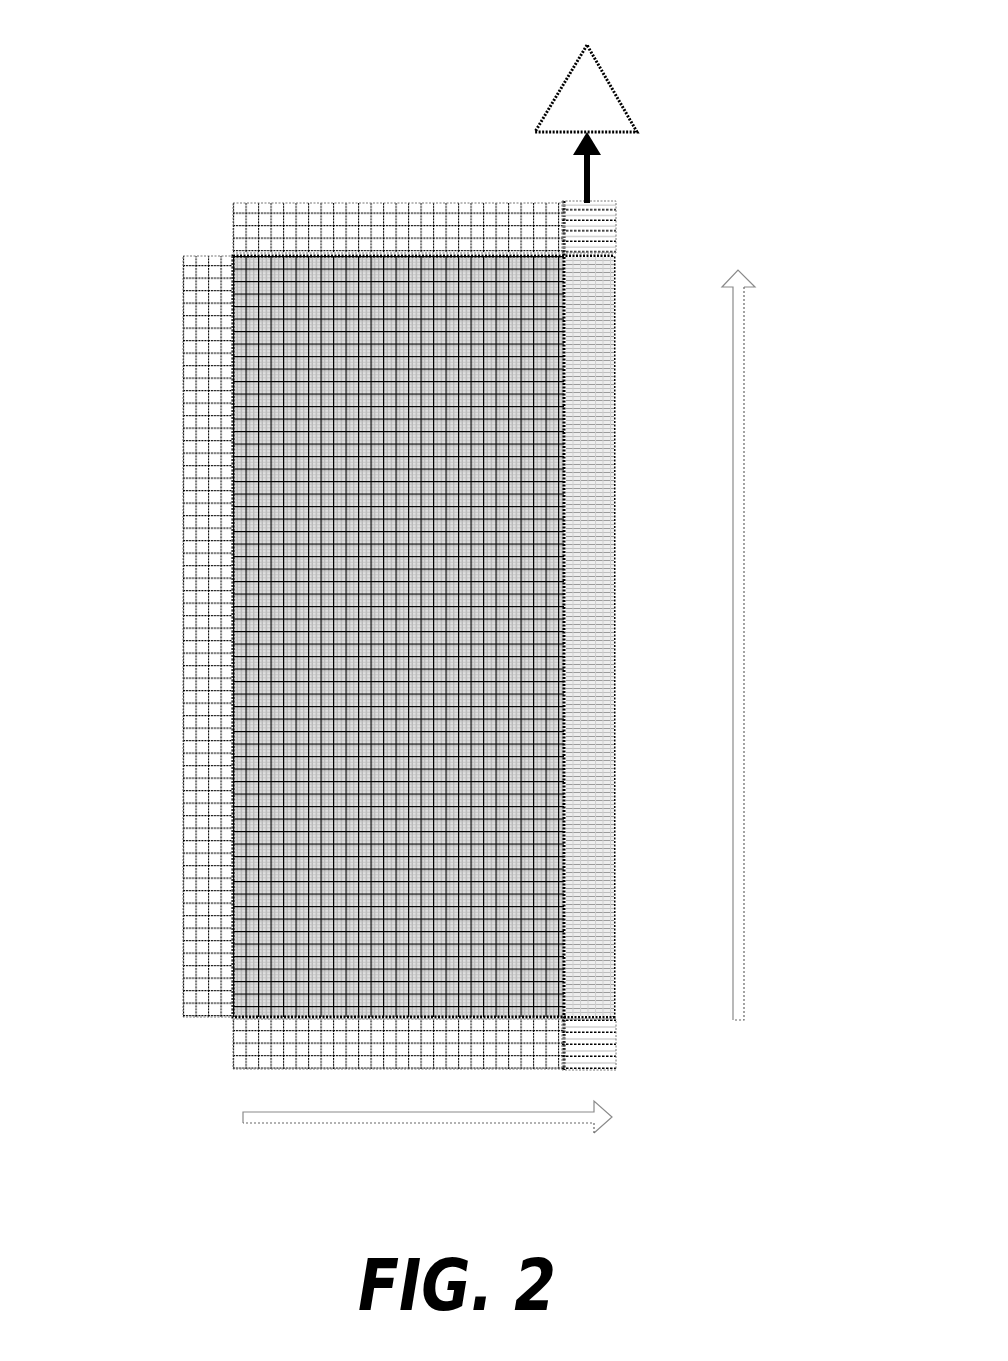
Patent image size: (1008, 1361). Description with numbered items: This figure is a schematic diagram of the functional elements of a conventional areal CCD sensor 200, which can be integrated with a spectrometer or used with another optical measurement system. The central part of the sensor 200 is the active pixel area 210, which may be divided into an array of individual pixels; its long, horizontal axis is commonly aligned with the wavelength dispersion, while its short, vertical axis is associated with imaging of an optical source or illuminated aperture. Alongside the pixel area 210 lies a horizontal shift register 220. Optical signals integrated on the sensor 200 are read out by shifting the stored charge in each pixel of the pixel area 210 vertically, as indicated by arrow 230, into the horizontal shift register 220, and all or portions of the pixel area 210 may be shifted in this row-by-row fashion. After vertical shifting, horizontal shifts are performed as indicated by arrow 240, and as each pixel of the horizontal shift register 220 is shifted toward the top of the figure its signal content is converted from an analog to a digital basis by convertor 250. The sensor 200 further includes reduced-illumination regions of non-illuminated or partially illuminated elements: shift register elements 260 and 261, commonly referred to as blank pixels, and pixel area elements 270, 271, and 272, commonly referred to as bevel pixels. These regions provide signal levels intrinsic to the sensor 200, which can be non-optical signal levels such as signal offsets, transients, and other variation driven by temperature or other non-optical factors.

The areal CCD sensor 200 is at (150, 98).
The active pixel area 210 is at (423, 635).
The horizontal shift register 220 is at (585, 528).
The arrow 230 is at (320, 1128).
The arrow 240 is at (743, 738).
The convertor 250 is at (560, 91).
The shift register element 260 is at (618, 1050).
The shift register element 261 is at (618, 226).
The pixel area element 270 is at (232, 1062).
The pixel area element 271 is at (232, 226).
The pixel area element 272 is at (183, 678).